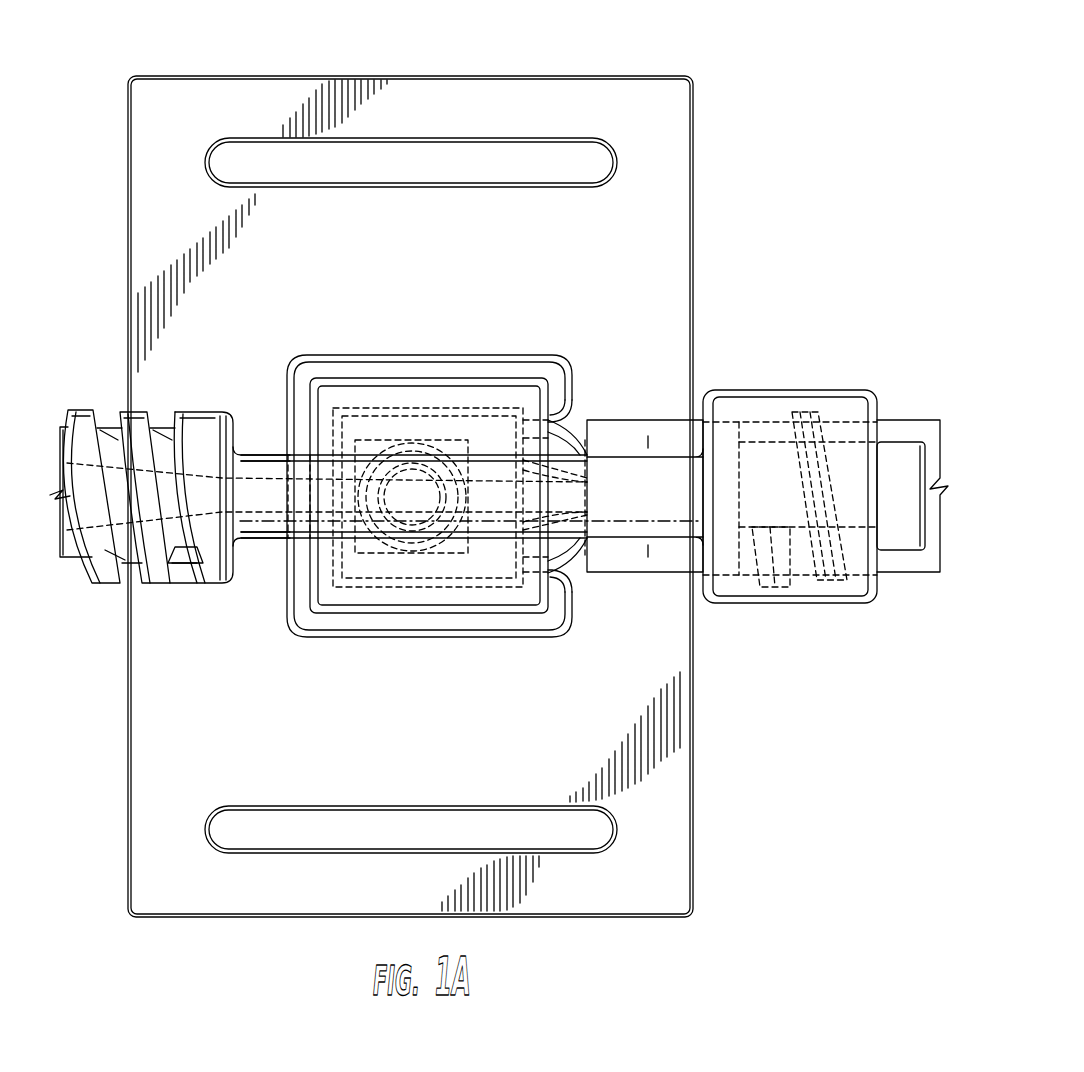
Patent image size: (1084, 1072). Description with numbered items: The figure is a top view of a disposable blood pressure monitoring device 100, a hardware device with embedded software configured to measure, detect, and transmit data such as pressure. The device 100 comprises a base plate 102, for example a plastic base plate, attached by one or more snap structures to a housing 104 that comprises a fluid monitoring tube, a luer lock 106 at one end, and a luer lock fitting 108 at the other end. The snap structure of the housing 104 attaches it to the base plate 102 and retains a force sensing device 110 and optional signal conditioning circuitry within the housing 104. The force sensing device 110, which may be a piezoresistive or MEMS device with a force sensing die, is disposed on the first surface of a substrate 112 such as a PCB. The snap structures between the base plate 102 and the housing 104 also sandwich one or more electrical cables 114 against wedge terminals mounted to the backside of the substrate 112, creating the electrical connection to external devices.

The disposable blood pressure monitoring device 100 is at (416, 36).
The base plate 102 is at (697, 135).
The housing 104 is at (275, 457).
The luer lock 106 is at (80, 410).
The luer lock fitting 108 is at (756, 393).
The force sensing device 110 is at (412, 490).
The substrate 112 is at (493, 437).
The electrical cables 114 is at (558, 440).